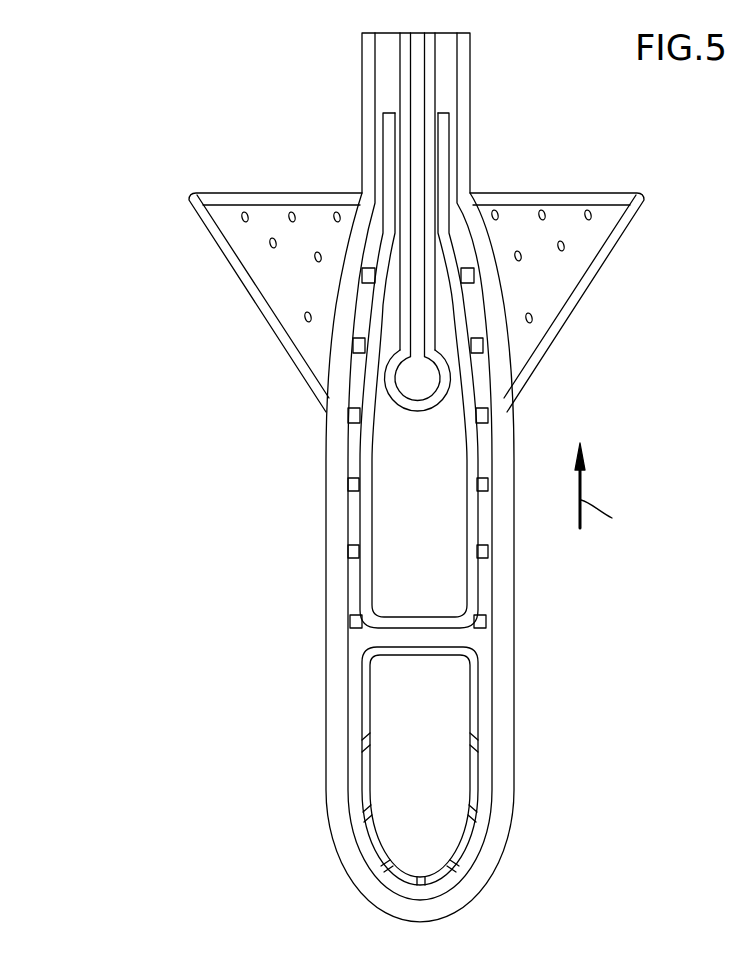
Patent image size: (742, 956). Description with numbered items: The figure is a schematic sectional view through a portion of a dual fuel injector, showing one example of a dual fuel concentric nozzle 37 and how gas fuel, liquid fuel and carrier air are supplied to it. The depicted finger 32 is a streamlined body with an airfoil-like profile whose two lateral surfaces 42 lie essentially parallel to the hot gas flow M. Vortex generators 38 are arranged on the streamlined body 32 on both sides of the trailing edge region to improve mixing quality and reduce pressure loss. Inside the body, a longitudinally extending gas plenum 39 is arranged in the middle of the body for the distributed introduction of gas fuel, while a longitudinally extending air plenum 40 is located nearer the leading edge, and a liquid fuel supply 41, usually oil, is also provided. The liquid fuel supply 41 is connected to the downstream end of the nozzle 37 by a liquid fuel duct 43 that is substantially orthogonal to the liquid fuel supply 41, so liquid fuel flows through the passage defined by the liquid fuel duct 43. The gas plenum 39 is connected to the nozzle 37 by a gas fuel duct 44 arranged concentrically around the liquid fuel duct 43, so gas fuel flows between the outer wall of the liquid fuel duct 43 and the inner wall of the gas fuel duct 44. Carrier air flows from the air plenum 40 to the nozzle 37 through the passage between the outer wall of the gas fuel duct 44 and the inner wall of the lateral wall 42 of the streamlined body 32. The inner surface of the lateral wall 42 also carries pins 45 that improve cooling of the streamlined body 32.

The finger 32 is at (579, 614).
The concentric nozzle 37 is at (336, 98).
The vortex generator 38 is at (555, 263).
The gas plenum 39 is at (430, 527).
The air plenum 40 is at (433, 768).
The liquid fuel supply 41 is at (422, 378).
The lateral surface 42 is at (340, 715).
The liquid fuel duct 43 is at (428, 97).
The gas fuel duct 44 is at (449, 184).
The pins 45 is at (352, 487).